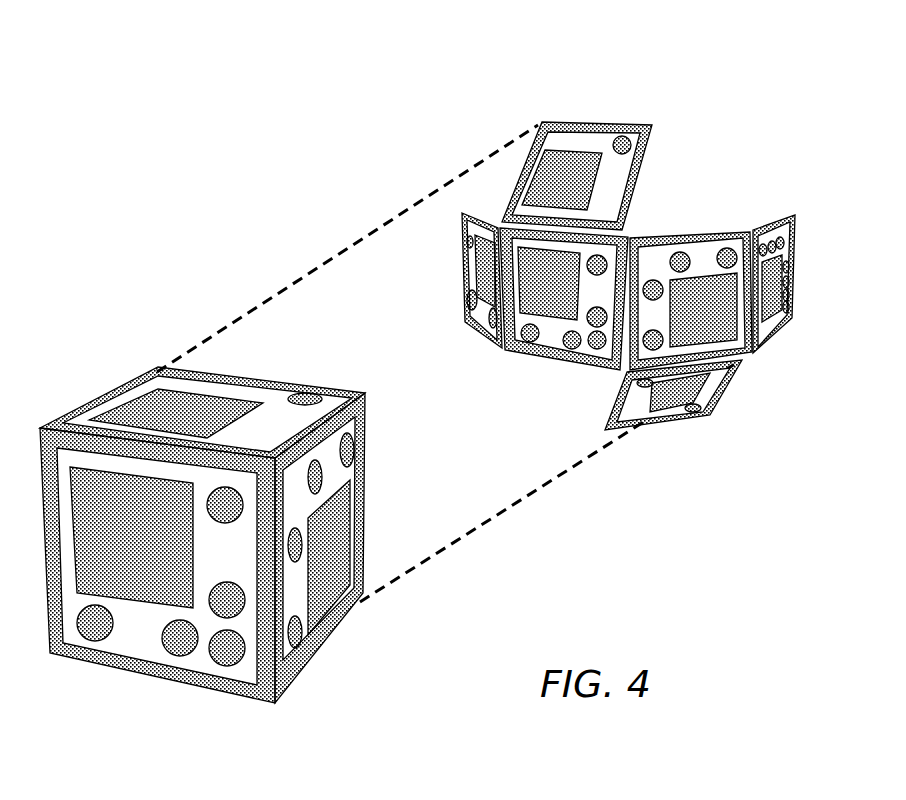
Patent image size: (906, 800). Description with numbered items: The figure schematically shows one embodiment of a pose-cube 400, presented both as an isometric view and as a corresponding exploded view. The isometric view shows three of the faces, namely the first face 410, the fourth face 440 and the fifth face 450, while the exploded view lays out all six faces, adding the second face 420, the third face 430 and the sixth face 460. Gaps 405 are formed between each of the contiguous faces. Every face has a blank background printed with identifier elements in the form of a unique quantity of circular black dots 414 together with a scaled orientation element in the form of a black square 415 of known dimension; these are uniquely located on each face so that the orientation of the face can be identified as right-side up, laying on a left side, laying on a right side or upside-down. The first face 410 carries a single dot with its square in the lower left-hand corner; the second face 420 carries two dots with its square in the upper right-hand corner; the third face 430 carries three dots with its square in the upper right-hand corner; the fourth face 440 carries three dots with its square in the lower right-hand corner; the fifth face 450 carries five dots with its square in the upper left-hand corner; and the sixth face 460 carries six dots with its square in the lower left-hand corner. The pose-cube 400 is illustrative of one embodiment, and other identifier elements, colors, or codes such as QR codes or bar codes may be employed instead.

The pose-cube 400 is at (257, 185).
The gaps 405 is at (365, 393).
The first face 410 is at (195, 380).
The circular black dots 414 is at (307, 388).
The black square 415 is at (140, 410).
The second face 420 is at (640, 397).
The third face 430 is at (475, 283).
The fourth face 440 is at (293, 590).
The fifth face 450 is at (238, 625).
The sixth face 460 is at (775, 235).